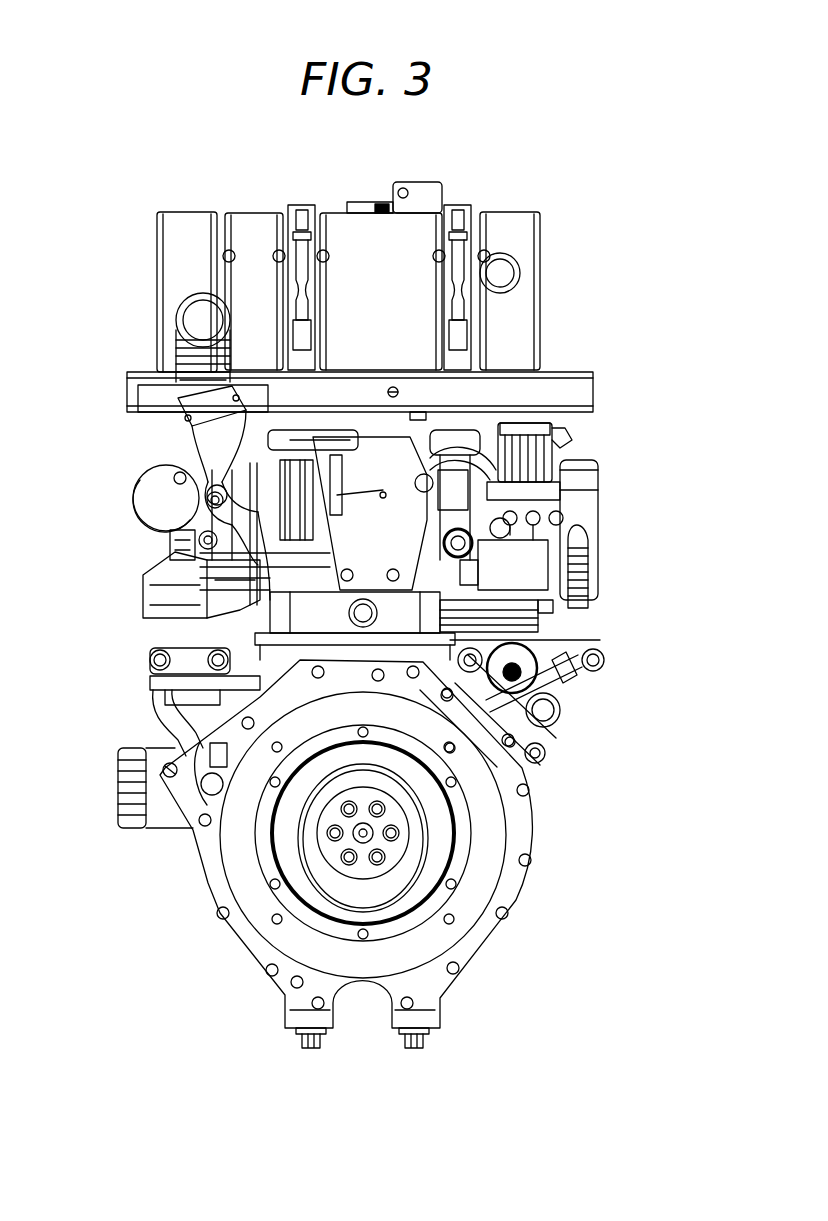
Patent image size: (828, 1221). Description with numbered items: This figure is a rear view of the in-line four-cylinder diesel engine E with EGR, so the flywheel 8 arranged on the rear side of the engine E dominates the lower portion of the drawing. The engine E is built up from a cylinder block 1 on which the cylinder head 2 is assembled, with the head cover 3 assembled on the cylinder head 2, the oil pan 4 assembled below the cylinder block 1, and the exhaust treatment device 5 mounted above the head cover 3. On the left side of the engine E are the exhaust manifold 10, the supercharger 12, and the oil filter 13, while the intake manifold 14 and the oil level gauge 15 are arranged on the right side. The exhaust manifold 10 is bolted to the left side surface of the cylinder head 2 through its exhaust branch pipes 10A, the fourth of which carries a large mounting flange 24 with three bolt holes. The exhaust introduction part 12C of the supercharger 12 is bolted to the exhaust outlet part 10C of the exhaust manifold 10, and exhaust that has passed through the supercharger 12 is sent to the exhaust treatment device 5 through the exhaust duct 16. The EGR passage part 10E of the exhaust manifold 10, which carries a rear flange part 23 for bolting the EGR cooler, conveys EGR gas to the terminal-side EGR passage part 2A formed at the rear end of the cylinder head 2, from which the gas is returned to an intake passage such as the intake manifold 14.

The engine E is at (620, 372).
The exhaust treatment device 5 is at (196, 214).
The exhaust duct 16 is at (172, 356).
The supercharger 12 is at (157, 454).
The exhaust introduction part 12C is at (170, 540).
The exhaust outlet part 10C is at (152, 598).
The exhaust manifold 10 is at (155, 622).
The rear flange part 23 is at (153, 658).
The EGR passage part 10E is at (167, 682).
The cylinder block 1 is at (173, 713).
The oil filter 13 is at (153, 830).
The exhaust branch pipe 10A is at (343, 537).
The mounting flange 24 is at (300, 620).
The head cover 3 is at (573, 443).
The intake manifold 14 is at (588, 578).
The oil level gauge 15 is at (605, 660).
The terminal-side EGR passage part 2A is at (397, 623).
The cylinder head 2 is at (516, 732).
The flywheel 8 is at (487, 883).
The oil pan 4 is at (283, 1008).